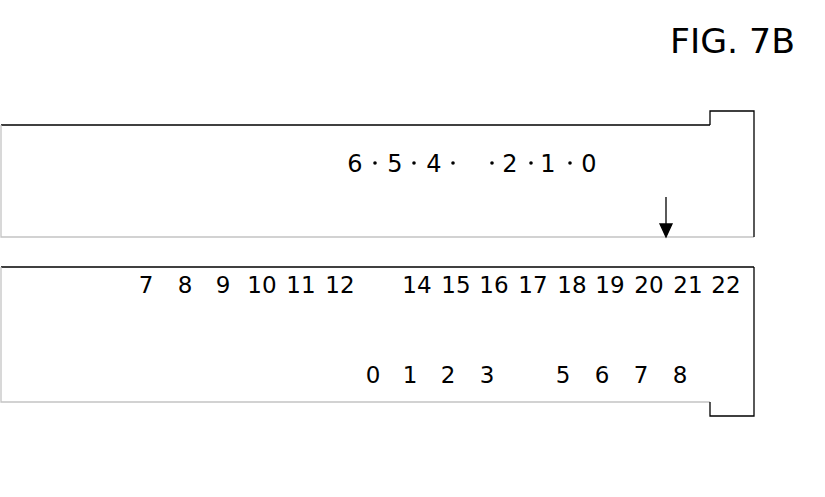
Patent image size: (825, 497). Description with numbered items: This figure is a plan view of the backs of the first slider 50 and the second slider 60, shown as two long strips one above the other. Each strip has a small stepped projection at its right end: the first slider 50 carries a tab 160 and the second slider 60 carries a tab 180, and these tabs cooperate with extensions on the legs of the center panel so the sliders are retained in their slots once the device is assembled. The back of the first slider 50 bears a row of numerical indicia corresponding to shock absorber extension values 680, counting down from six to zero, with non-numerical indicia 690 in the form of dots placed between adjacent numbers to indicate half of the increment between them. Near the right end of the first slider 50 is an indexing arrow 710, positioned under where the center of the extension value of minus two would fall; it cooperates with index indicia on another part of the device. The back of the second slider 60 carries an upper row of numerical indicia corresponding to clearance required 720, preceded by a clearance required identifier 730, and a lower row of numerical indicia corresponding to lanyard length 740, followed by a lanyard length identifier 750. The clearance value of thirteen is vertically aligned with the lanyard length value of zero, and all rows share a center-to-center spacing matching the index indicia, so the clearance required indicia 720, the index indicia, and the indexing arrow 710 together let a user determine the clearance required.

The first slider 50 is at (384, 123).
The second slider 60 is at (339, 405).
The tab 160 is at (735, 108).
The tab 180 is at (733, 417).
The numerical indicia corresponding to shock absorber extension values 680 is at (470, 178).
The non-numerical indicia 690 is at (453, 153).
The indexing arrow 710 is at (670, 207).
The numerical indicia corresponding to clearance required 720 is at (367, 295).
The clearance required identifier 730 is at (113, 298).
The numerical indicia corresponding to lanyard length 740 is at (510, 365).
The lanyard length identifier 750 is at (725, 363).